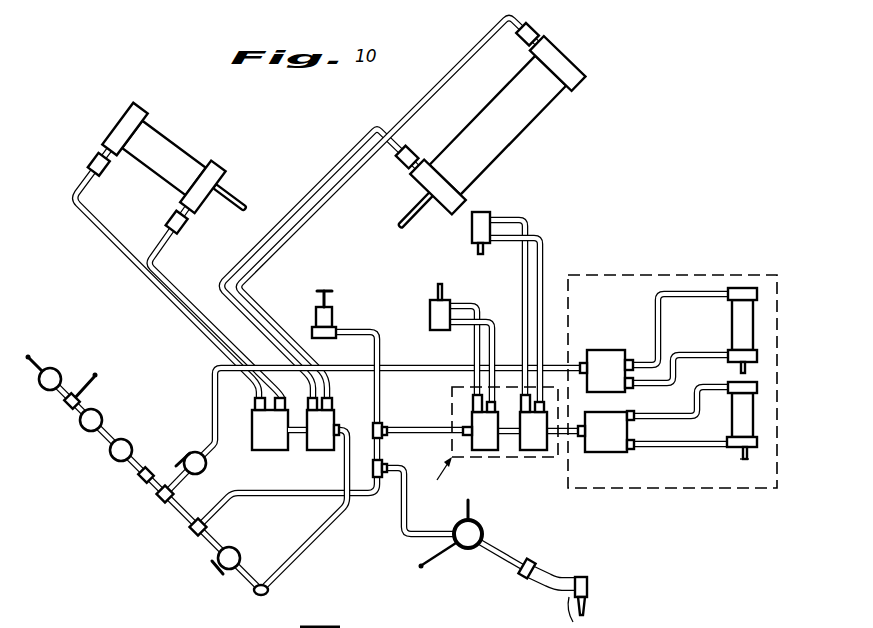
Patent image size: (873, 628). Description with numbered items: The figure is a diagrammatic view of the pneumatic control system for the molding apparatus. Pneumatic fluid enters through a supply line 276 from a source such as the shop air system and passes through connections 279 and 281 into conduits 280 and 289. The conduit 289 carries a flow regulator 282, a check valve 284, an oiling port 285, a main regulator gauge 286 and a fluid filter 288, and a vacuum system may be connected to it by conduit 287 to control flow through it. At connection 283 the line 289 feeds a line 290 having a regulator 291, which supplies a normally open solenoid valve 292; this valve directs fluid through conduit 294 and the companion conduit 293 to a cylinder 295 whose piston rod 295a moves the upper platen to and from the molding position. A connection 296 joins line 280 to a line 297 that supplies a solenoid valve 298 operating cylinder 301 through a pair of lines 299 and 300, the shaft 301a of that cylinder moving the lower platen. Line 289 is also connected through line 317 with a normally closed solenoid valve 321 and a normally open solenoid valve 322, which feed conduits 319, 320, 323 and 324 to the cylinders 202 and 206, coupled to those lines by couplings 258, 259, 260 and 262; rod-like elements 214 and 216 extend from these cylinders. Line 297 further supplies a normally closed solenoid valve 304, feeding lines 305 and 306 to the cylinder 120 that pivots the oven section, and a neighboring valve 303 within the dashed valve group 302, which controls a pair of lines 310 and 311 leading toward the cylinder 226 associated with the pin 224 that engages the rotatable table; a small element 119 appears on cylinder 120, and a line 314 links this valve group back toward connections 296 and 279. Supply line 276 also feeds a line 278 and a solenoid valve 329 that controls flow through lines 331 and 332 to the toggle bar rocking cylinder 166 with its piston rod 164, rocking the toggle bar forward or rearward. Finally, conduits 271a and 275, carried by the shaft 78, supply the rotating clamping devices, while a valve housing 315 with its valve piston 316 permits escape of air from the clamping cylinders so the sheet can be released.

The shaft 78 is at (483, 520).
The pin 119 is at (437, 290).
The cylinder 120 is at (440, 326).
The piston rod 164 is at (585, 603).
The pneumatic cylinder assembly 166 is at (588, 582).
The cylinder 202 is at (485, 125).
The cylinder 206 is at (177, 183).
The piston rod 214 is at (242, 200).
The piston rod 216 is at (418, 207).
The pin 224 is at (480, 255).
The cylinder 226 is at (482, 211).
The coupling 258 is at (413, 157).
The fitting 259 is at (543, 37).
The coupling 260 is at (186, 228).
The coupling 262 is at (108, 172).
The line 271a is at (440, 562).
The conduit 275 is at (470, 505).
The supply line 276 is at (433, 537).
The line 278 is at (500, 552).
The connection 279 is at (387, 467).
The conduit 280 is at (360, 496).
The connection 281 is at (199, 517).
The flow regulator 282 is at (230, 569).
The connection 283 is at (160, 498).
The check valve 284 is at (148, 470).
The oiling port 285 is at (125, 446).
The main regulator gauge 286 is at (98, 408).
The conduit 287 is at (93, 374).
The fluid filter 288 is at (50, 368).
The conduit 289 is at (102, 440).
The line 290 is at (212, 393).
The regulator 291 is at (206, 466).
The normally open solenoid valve 292 is at (608, 354).
The conduit 293 is at (660, 297).
The conduit 294 is at (702, 355).
The cylinder 295 is at (761, 286).
The piston rod 295a is at (740, 371).
The connection 296 is at (382, 424).
The line 297 is at (437, 430).
The solenoid valve 298 is at (604, 420).
The line 299 is at (655, 413).
The line 300 is at (681, 446).
The cylinder 301 is at (738, 434).
The shaft 301a is at (761, 465).
The valve assembly 302 is at (488, 444).
The valve 303 is at (533, 438).
The normally closed solenoid valve 304 is at (487, 438).
The line 305 is at (493, 345).
The line 306 is at (470, 305).
The line 310 is at (527, 262).
The line 311 is at (541, 270).
The conduit 314 is at (370, 332).
The valve housing 315 is at (335, 322).
The valve piston 316 is at (325, 291).
The line 317 is at (300, 557).
The conduit 319 is at (329, 394).
The conduit 320 is at (260, 327).
The normally closed solenoid valve 321 is at (323, 445).
The normally open solenoid valve 322 is at (272, 445).
The conduit 323 is at (138, 276).
The conduit 324 is at (188, 297).
The solenoid valve 329 is at (530, 562).
The line 331 is at (551, 575).
The line 332 is at (578, 622).